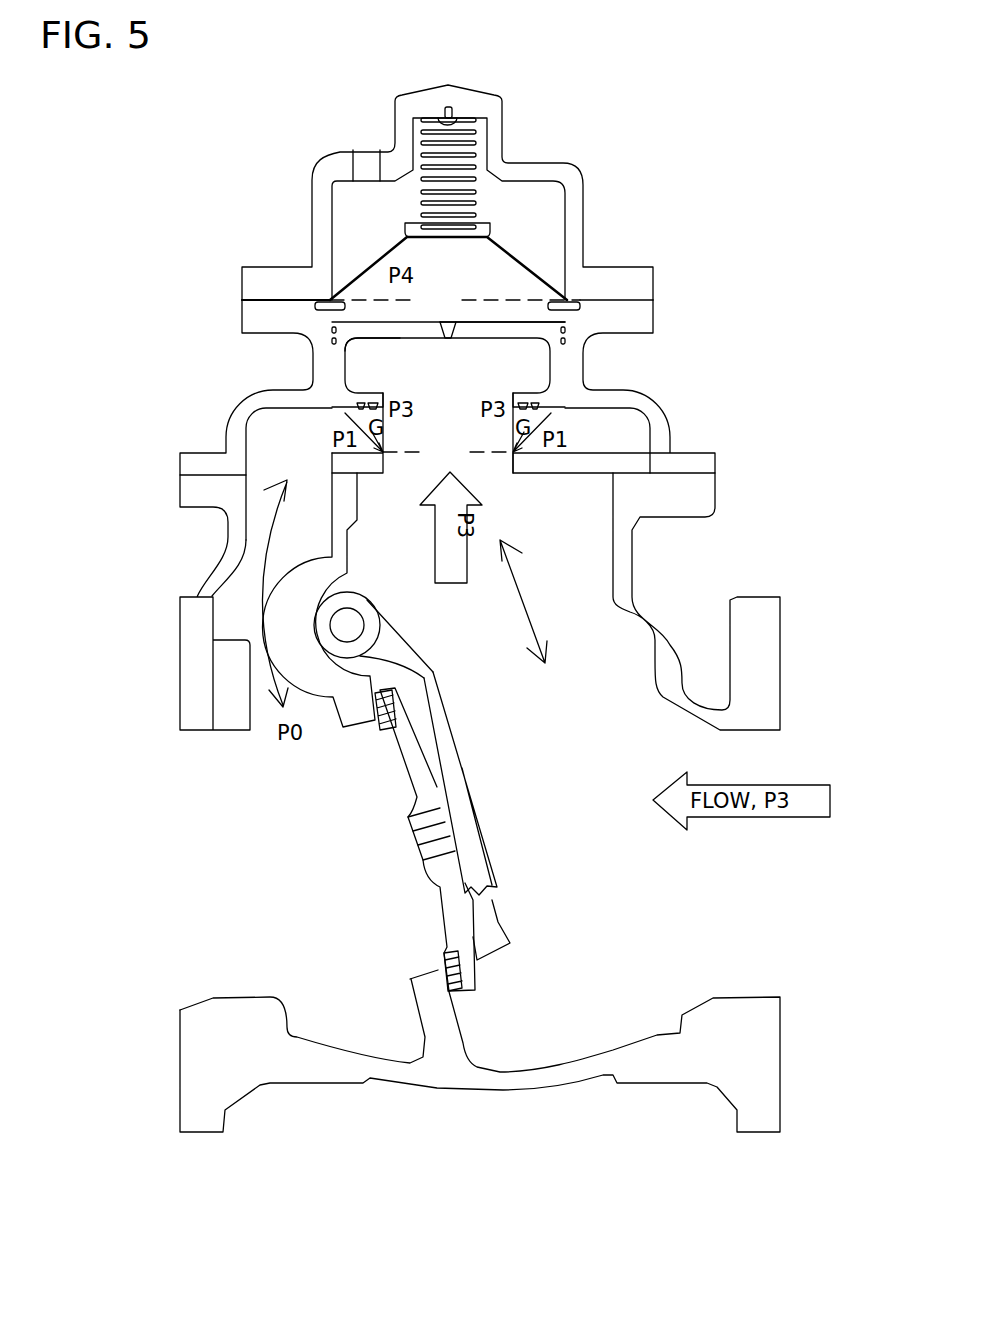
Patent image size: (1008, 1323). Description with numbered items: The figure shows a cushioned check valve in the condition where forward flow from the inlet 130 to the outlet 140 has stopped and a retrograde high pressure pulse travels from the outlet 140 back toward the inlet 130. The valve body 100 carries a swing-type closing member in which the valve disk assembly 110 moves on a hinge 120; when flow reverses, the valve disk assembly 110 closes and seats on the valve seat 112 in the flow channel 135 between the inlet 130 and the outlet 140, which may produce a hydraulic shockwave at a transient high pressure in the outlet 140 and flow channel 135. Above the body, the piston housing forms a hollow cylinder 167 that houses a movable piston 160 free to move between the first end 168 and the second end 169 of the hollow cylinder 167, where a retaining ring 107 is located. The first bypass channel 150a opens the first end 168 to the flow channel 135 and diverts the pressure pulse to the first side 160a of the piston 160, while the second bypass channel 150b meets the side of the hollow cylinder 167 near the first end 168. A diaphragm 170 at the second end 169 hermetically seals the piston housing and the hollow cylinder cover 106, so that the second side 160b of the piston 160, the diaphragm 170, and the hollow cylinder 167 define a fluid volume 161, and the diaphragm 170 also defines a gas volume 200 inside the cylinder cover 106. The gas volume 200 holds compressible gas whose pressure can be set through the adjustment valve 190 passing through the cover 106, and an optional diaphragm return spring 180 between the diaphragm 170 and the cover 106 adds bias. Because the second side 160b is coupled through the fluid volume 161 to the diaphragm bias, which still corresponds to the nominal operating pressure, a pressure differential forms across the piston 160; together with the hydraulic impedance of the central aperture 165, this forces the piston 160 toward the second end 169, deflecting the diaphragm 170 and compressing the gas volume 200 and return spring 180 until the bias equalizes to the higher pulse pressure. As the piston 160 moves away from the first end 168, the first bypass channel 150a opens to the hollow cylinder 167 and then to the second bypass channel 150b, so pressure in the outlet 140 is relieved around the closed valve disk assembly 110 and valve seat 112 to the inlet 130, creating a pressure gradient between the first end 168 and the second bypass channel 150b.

The valve body 100 is at (520, 1090).
The hollow cylinder cover 106 is at (547, 162).
The retaining ring 107 is at (580, 308).
The valve disk assembly 110 is at (472, 790).
The valve seat 112 is at (440, 968).
The hinge 120 is at (367, 597).
The inlet 130 is at (258, 882).
The flow channel 135 is at (580, 882).
The outlet 140 is at (768, 882).
The first bypass channel 150a is at (526, 601).
The second bypass channel 150b is at (434, 565).
The movable piston 160 is at (545, 353).
The first side of the piston 160a is at (403, 338).
The second side of the piston 160b is at (495, 322).
The fluid volume 161 is at (466, 269).
The central aperture 165 is at (447, 338).
The hollow cylinder 167 is at (603, 370).
The first end of the hollow cylinder 168 is at (448, 456).
The second end of the hollow cylinder 169 is at (455, 300).
The diaphragm 170 is at (537, 273).
The diaphragm return spring 180 is at (420, 197).
The adjustment valve 190 is at (358, 152).
The gas volume 200 is at (541, 219).